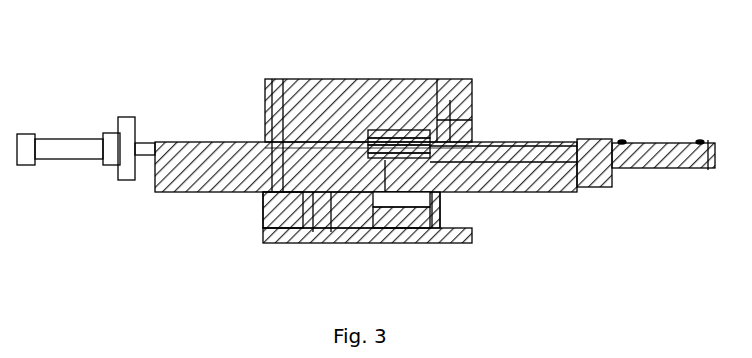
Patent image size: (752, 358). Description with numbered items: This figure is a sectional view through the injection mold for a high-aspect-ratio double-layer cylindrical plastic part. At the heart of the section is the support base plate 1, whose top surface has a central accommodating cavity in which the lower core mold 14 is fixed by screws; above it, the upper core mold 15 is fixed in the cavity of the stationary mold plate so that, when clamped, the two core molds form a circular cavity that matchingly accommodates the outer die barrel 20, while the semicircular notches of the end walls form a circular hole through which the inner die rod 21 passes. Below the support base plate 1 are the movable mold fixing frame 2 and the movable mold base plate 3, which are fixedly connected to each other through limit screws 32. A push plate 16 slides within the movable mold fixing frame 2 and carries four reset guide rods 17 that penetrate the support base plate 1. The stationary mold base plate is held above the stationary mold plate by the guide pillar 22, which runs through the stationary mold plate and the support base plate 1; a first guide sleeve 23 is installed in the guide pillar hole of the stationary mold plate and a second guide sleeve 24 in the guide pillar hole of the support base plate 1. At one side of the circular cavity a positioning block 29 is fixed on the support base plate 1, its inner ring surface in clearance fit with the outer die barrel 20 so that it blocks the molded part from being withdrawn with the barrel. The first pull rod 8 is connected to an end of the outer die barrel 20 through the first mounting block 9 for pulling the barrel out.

The support base plate 1 is at (510, 175).
The movable mold fixing frame 2 is at (290, 225).
The movable mold base plate 3 is at (444, 232).
The first pull rod 8 is at (535, 148).
The first mounting block 9 is at (458, 128).
The lower core mold 14 is at (387, 165).
The upper core mold 15 is at (390, 135).
The push plate 16 is at (396, 225).
The reset guide rods 17 is at (322, 210).
The outer die barrel 20 is at (412, 140).
The inner die rod 21 is at (375, 128).
The guide pillar 22 is at (288, 110).
The first guide sleeve 23 is at (275, 150).
The second guide sleeve 24 is at (265, 145).
The positioning block 29 is at (452, 136).
The limit screws 32 is at (277, 228).